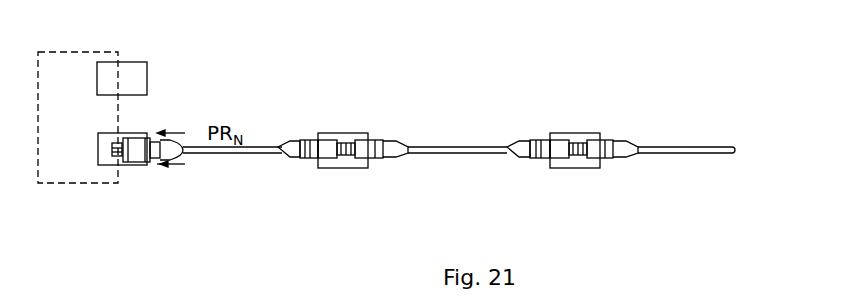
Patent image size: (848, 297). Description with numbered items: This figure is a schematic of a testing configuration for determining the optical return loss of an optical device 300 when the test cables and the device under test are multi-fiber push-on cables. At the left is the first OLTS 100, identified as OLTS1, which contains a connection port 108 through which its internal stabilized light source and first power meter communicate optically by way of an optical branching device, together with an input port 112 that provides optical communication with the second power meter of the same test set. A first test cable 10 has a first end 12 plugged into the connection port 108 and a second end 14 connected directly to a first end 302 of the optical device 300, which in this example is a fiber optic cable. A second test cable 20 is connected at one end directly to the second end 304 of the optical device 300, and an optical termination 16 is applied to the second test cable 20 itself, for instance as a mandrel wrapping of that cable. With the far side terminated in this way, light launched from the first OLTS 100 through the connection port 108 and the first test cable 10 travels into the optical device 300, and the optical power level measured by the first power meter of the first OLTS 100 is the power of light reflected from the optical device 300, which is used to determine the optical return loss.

The first OLTS 100 is at (118, 47).
The input port 112 is at (137, 83).
The connection port 108 is at (135, 166).
The first end of the first test cable 12 is at (150, 155).
The first test cable 10 is at (232, 152).
The second end of the first test cable 14 is at (316, 138).
The first end of the optical device 302 is at (377, 145).
The optical device 300 is at (455, 152).
The second end of the optical device 304 is at (542, 138).
The second test cable 20 is at (680, 152).
The optical termination 16 is at (692, 163).